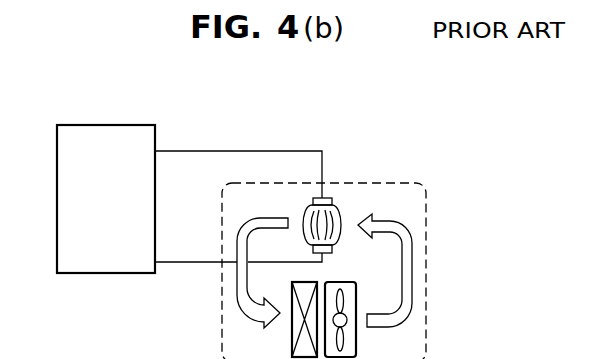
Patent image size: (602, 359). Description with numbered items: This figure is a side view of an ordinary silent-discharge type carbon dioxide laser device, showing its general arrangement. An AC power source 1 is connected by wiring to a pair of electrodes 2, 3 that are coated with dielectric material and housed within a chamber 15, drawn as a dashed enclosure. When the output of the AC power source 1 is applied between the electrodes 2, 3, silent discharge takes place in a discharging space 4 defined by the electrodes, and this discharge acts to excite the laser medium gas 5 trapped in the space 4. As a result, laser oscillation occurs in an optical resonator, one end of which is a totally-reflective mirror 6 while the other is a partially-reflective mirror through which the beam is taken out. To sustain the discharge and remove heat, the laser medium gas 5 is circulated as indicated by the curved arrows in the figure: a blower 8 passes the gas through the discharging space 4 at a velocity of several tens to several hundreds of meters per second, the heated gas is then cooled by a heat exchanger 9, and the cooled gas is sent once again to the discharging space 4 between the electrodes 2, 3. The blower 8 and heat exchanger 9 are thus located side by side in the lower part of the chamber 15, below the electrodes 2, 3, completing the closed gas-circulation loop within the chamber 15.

The AC power source 1 is at (80, 125).
The electrode 2 is at (329, 197).
The electrode 3 is at (334, 248).
The discharging space 4 is at (335, 222).
The laser medium gas 5 is at (413, 250).
The totally-reflective mirror 6 is at (305, 215).
The blower 8 is at (356, 340).
The heat exchanger 9 is at (292, 343).
The chamber 15 is at (427, 208).